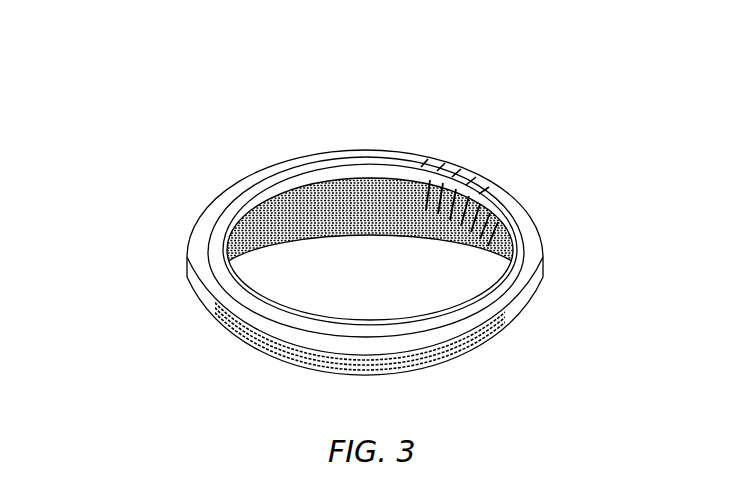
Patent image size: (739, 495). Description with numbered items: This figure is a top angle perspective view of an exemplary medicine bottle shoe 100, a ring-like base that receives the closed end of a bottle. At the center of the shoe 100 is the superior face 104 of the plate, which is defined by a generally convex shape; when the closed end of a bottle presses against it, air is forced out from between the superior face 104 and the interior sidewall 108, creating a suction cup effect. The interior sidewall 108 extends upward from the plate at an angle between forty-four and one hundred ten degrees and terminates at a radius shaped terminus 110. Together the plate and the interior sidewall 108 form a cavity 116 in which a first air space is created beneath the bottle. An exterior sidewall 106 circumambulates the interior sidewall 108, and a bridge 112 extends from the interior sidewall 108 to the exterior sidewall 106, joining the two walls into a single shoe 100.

The shoe 100 is at (165, 145).
The superior face 104 is at (378, 278).
The exterior sidewall 106 is at (203, 292).
The interior sidewall 108 is at (378, 186).
The radius shaped terminus 110 is at (287, 178).
The bridge 112 is at (500, 288).
The cavity 116 is at (493, 250).